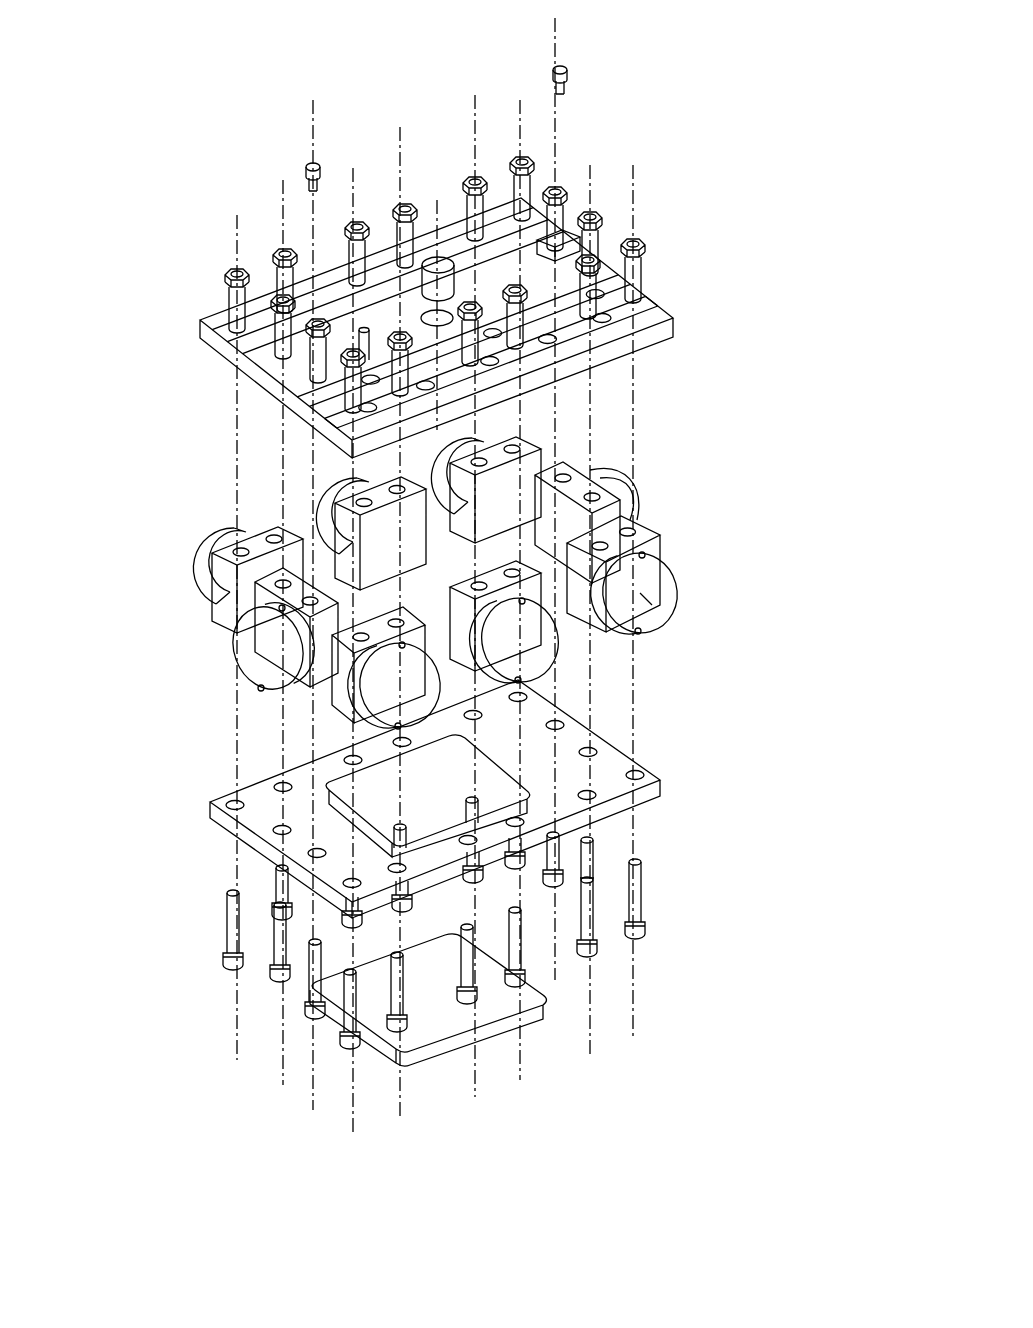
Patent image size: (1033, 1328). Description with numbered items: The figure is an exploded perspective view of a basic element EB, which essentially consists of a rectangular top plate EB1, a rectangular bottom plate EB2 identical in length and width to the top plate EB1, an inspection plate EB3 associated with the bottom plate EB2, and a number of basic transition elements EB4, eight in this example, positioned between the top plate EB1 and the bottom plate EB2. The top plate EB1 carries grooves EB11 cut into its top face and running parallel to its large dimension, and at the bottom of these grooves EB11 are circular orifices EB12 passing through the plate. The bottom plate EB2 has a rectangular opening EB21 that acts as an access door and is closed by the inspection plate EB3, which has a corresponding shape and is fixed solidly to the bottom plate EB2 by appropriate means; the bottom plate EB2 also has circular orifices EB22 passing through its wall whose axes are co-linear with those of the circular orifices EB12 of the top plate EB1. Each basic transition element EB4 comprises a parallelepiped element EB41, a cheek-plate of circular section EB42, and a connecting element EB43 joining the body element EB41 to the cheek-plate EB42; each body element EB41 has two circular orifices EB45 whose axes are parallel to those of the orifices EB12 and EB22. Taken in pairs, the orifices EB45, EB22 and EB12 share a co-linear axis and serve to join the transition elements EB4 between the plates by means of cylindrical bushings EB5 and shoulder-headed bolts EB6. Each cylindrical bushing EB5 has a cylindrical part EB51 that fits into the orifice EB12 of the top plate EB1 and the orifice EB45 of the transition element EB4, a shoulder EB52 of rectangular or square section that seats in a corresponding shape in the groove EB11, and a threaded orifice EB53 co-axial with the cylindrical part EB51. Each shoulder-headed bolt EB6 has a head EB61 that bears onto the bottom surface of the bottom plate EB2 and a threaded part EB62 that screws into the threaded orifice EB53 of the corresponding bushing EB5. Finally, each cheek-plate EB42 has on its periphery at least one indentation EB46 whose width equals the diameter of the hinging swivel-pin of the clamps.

The basic element EB is at (147, 425).
The top plate EB1 is at (676, 311).
The grooves EB11 is at (550, 340).
The circular orifices EB12 is at (585, 323).
The bottom plate EB2 is at (678, 782).
The rectangular opening EB21 is at (500, 690).
The circular orifices EB22 is at (637, 772).
The inspection plate EB3 is at (539, 1039).
The basic transition element EB4 is at (702, 589).
The parallelepiped element EB41 is at (225, 600).
The cheek-plate of circular section EB42 is at (252, 658).
The connecting element EB43 is at (292, 695).
The circular orifices EB45 is at (240, 645).
The indentation EB46 is at (256, 687).
The cylindrical bushing EB5 is at (662, 256).
The cylindrical part EB51 is at (641, 280).
The shoulder EB52 is at (655, 252).
The threaded orifice EB53 is at (633, 240).
The shoulder-headed bolt EB6 is at (664, 911).
The head EB61 is at (641, 933).
The threaded part EB62 is at (641, 875).